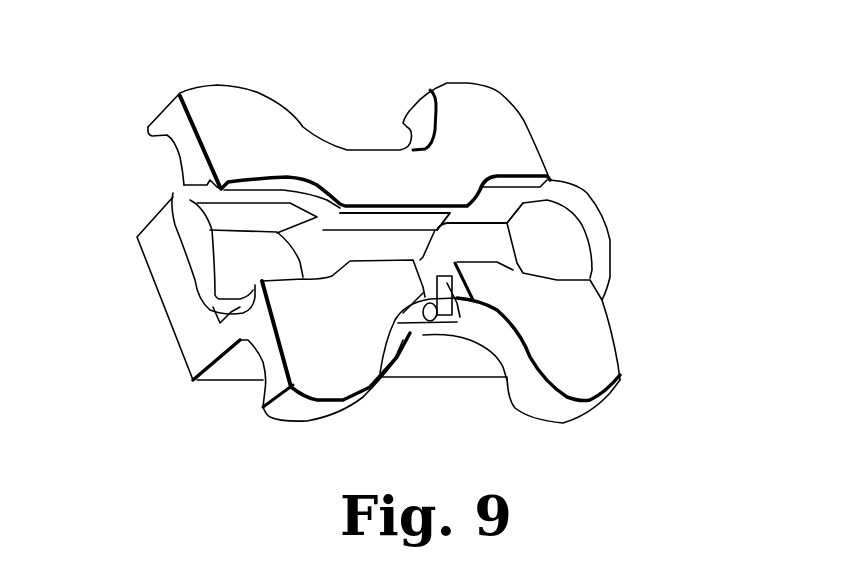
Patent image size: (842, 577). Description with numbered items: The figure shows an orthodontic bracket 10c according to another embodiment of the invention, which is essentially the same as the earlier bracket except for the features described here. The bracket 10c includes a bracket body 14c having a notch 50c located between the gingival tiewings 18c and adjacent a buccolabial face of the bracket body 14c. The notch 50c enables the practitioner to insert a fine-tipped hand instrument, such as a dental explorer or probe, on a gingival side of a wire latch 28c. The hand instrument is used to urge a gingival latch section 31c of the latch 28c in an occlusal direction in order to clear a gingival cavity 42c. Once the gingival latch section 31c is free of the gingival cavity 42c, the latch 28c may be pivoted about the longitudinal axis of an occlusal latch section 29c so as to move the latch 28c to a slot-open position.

The orthodontic bracket 10c is at (548, 57).
The bracket body 14c is at (545, 137).
The gingival tiewings 18c is at (293, 403).
The wire latch 28c is at (180, 246).
The occlusal latch section 29c is at (183, 185).
The gingival latch section 31c is at (240, 313).
The gingival cavity 42c is at (468, 323).
The notch 50c is at (410, 330).